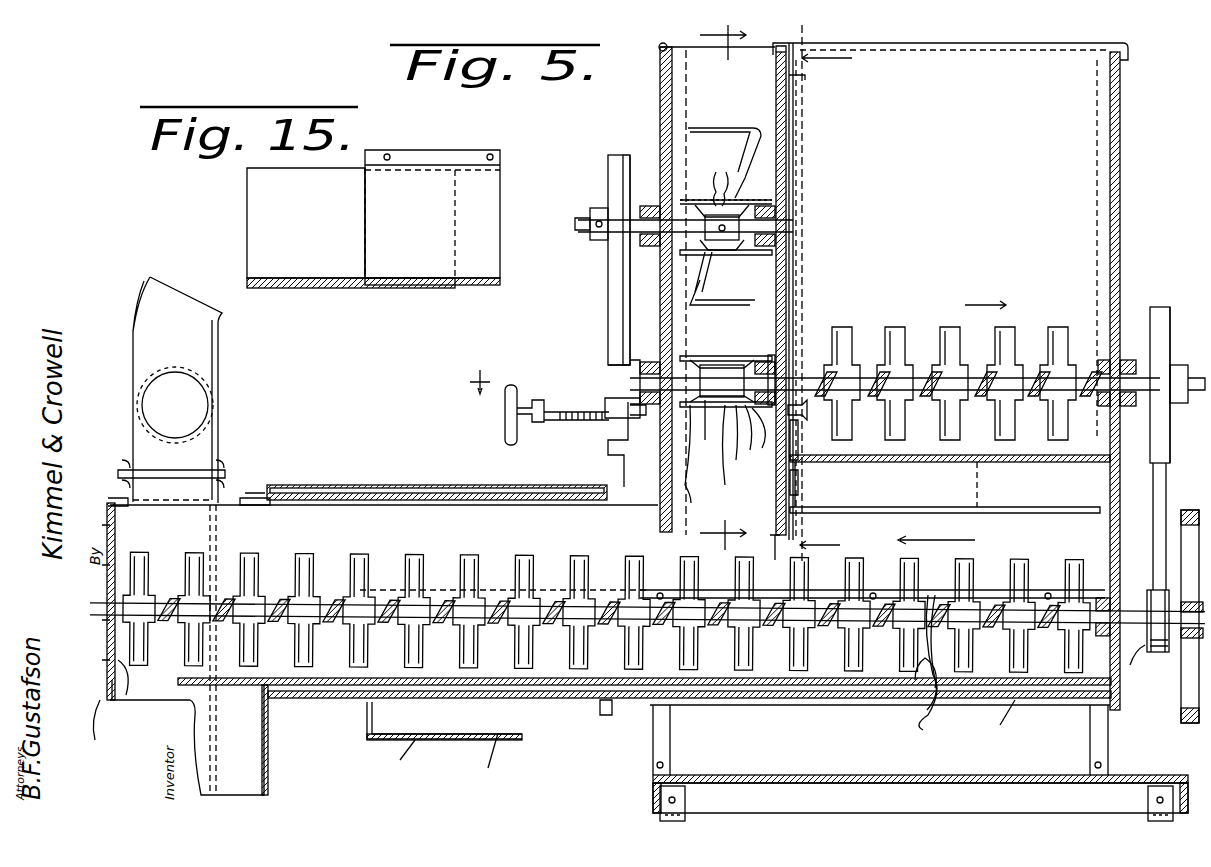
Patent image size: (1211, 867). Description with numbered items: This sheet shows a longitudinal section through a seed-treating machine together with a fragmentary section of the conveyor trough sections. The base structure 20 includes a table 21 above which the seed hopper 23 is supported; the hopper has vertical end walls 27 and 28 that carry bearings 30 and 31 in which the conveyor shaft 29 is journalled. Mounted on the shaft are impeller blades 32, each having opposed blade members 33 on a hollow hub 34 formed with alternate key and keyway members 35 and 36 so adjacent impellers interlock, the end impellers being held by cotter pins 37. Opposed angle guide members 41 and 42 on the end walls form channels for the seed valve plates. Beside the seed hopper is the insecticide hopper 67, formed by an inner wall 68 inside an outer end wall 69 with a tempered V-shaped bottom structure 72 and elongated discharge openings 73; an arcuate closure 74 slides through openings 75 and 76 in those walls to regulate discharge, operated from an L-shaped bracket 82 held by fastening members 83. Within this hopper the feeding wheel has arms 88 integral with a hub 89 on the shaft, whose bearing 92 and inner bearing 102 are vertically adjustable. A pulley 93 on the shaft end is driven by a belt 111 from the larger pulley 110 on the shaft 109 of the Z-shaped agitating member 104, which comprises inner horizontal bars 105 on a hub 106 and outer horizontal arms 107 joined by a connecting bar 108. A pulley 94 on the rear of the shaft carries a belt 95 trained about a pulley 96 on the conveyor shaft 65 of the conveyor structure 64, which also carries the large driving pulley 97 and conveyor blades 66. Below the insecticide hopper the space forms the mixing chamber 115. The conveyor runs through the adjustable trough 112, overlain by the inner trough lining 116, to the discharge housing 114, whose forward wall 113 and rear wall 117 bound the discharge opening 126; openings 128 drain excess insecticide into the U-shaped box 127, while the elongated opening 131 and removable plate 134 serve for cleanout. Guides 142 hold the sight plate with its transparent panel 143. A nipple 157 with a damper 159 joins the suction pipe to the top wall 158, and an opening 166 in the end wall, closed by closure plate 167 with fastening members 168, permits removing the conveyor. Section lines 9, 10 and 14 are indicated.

In FIG. 5, the section line 9- 9 is at (710, 286).
In FIG. 5, the section line 10- 10 is at (844, 295).
In FIG. 5, the upper paddle shaft / section line 14- 14 is at (650, 335).
In FIG. 5, the base structure 20 is at (750, 766).
In FIG. 5, the table 21 is at (854, 772).
In FIG. 5, the hopper 23 is at (1128, 251).
In FIG. 5, the end wall 27 is at (1112, 185).
In FIG. 5, the end wall 28 is at (794, 130).
In FIG. 5, the conveyor shaft 29 is at (1195, 400).
In FIG. 5, the bearing 30 is at (1132, 355).
In FIG. 5, the bearing 31 is at (790, 363).
In FIG. 5, the impeller blades 32 is at (890, 328).
In FIG. 5, the blade members 33 is at (953, 338).
In FIG. 5, the hollow hub 34 is at (938, 397).
In FIG. 5, the key member 35 is at (957, 373).
In FIG. 5, the keyway member 36 is at (924, 373).
In FIG. 5, the cotter pins 37 is at (1080, 360).
In FIG. 5, the guide member 41 is at (1045, 462).
In FIG. 5, the guide member 42 is at (792, 444).
In FIG. 5, the conveyor structure 64 is at (972, 568).
In FIG. 5, the conveyor shaft 65 is at (1123, 615).
In FIG. 5, the conveyor blades 66 is at (1017, 570).
In FIG. 5, the insecticide hopper 67 is at (808, 104).
In FIG. 5, the inner wall 68 is at (749, 290).
In FIG. 5, the outer end wall 69 is at (660, 98).
In FIG. 5, the V-shaped bottom structure 72 is at (740, 455).
In FIG. 5, the discharge openings 73 is at (750, 443).
In FIG. 5, the closure 74 is at (714, 442).
In FIG. 5, the opening 75 is at (699, 454).
In FIG. 5, the opening 76 is at (630, 395).
In FIG. 5, the L-shaped bracket 82 is at (567, 432).
In FIG. 5, the fastening members 83 is at (638, 448).
In FIG. 5, the arms 88 is at (765, 360).
In FIG. 5, the hub 89 is at (722, 367).
In FIG. 5, the bearing 92 is at (633, 350).
In FIG. 5, the pulley 93 is at (628, 400).
In FIG. 5, the pulley 94 is at (1171, 323).
In FIG. 5, the belt 95 is at (1172, 478).
In FIG. 5, the pulley 96 is at (1149, 642).
In FIG. 5, the driving pulley 97 is at (1182, 693).
In FIG. 5, the inner bearing 102 is at (792, 484).
In FIG. 5, the agitating member 104 is at (706, 300).
In FIG. 5, the inner horizontal bars 105 is at (716, 172).
In FIG. 5, the hub 106 is at (728, 248).
In FIG. 5, the outer horizontal arms 107 is at (736, 109).
In FIG. 5, the connecting bar 108 is at (768, 160).
In FIG. 5, the shaft 109 is at (797, 218).
In FIG. 5, the pulley 110 is at (605, 178).
In FIG. 5, the belt 111 is at (610, 290).
In FIG. 15, the adjustable trough 112 is at (325, 286).
In FIG. 5, the adjustable trough 112 is at (567, 705).
In FIG. 5, the forward wall 113 is at (120, 548).
In FIG. 5, the discharge housing 114 is at (110, 497).
In FIG. 5, the mixing chamber 115 is at (773, 555).
In FIG. 15, the inner trough lining 116 is at (462, 285).
In FIG. 5, the inner trough lining 116 is at (938, 667).
In FIG. 5, the rear wall 117 is at (268, 748).
In FIG. 5, the discharge opening 126 is at (620, 681).
In FIG. 5, the U-shaped box 127 is at (416, 766).
In FIG. 5, the openings 128 is at (476, 705).
In FIG. 5, the elongated opening 131 is at (501, 766).
In FIG. 5, the removable plate 134 is at (1006, 727).
In FIG. 5, the guides 142 is at (254, 495).
In FIG. 5, the transparent panel 143 is at (392, 485).
In FIG. 5, the nipple 157 is at (133, 448).
In FIG. 5, the top wall 158 is at (230, 490).
In FIG. 5, the damper 159 is at (175, 418).
In FIG. 5, the opening 166 is at (127, 683).
In FIG. 5, the closure plate 167 is at (107, 542).
In FIG. 5, the fastening members 168 is at (111, 730).